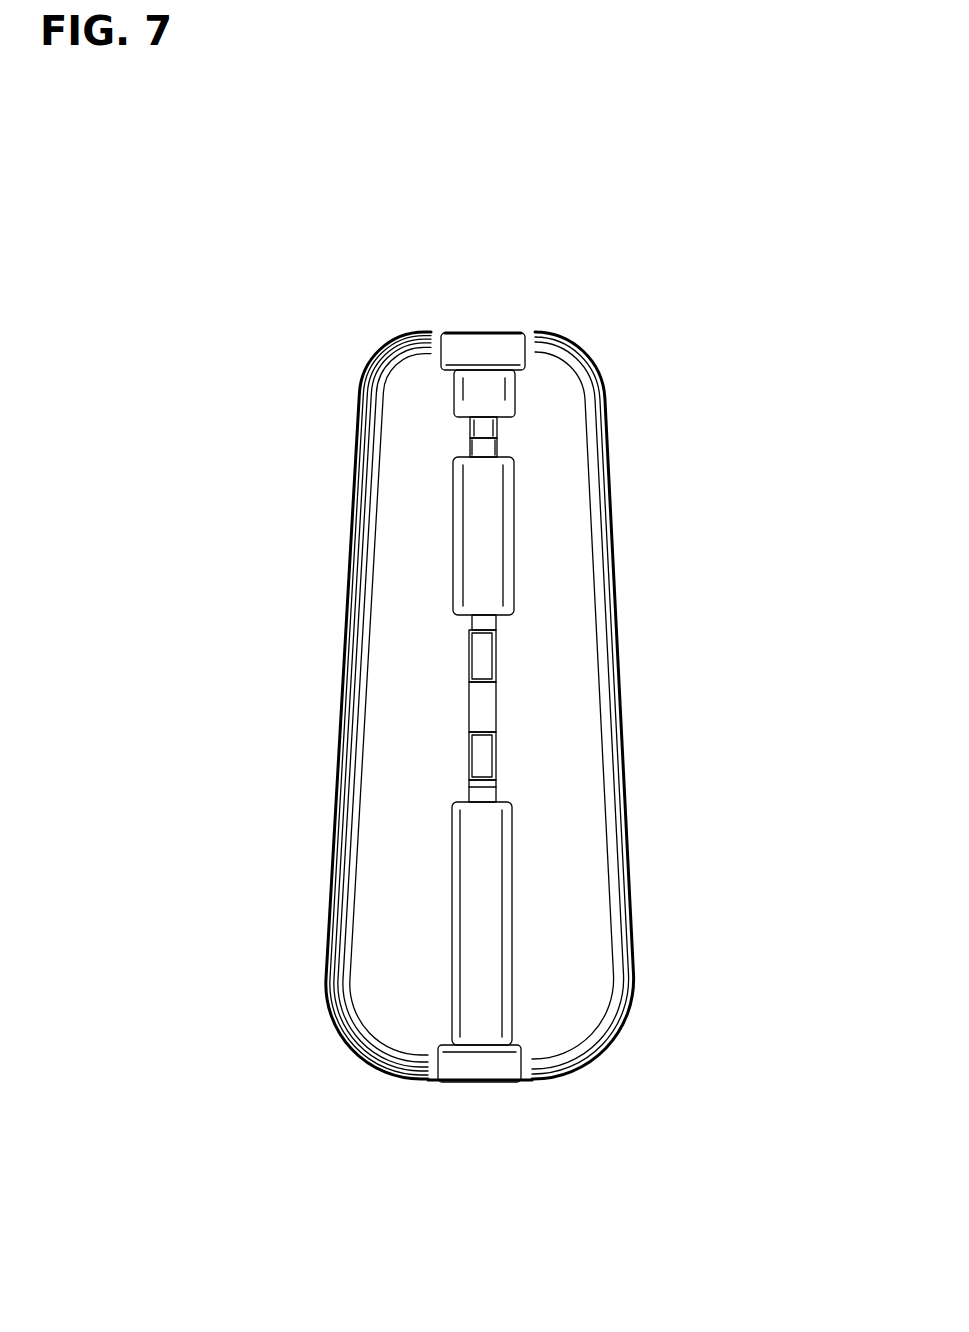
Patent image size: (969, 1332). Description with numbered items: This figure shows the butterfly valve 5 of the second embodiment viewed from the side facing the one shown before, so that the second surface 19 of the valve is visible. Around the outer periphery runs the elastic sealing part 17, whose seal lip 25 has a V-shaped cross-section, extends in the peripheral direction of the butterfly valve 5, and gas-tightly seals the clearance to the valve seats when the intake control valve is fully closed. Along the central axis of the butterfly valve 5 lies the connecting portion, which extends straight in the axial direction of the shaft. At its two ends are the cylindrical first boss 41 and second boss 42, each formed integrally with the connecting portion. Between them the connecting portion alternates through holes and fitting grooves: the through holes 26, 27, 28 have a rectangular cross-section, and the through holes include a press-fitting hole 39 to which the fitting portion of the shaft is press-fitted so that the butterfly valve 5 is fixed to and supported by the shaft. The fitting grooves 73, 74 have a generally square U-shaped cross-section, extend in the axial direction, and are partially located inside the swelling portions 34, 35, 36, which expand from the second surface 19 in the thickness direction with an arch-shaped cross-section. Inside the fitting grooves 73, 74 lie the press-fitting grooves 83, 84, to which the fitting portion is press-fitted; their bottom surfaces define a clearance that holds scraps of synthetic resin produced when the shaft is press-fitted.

The butterfly valve 5 is at (370, 312).
The elastic sealing part 17 is at (393, 706).
The seal lip 25 is at (338, 733).
The second surface 19 is at (587, 643).
The second boss 42 is at (480, 345).
The swelling portion 36 is at (497, 392).
The through hole 28 is at (629, 417).
The press-fitting hole 39 is at (493, 433).
The press-fitting groove 84 is at (478, 430).
The fitting groove 74 is at (490, 448).
The through hole 26 is at (490, 447).
The swelling portion 34 is at (492, 538).
The press-fitting groove 83 is at (477, 658).
The fitting groove 73 is at (488, 705).
The through hole 27 is at (473, 792).
The swelling portion 35 is at (487, 928).
The first boss 41 is at (483, 1067).